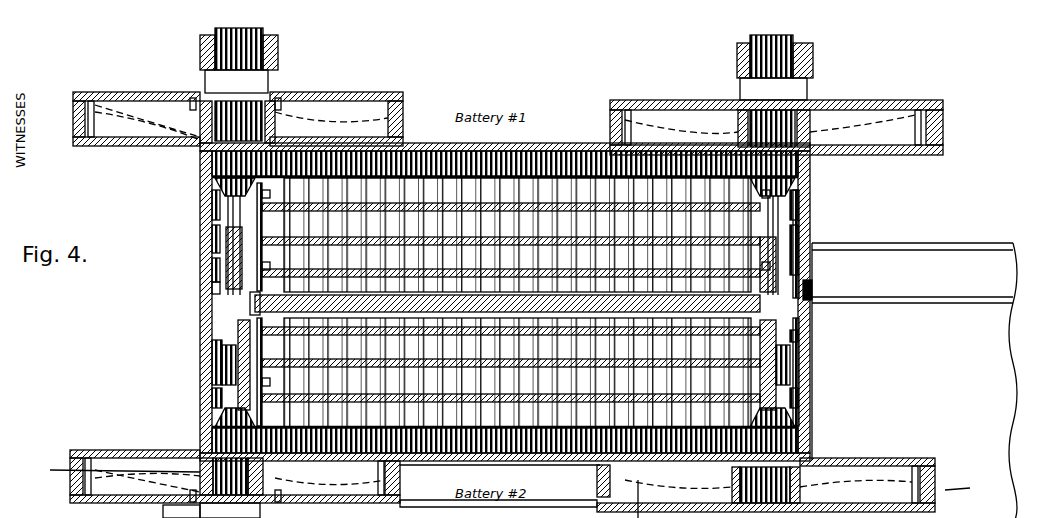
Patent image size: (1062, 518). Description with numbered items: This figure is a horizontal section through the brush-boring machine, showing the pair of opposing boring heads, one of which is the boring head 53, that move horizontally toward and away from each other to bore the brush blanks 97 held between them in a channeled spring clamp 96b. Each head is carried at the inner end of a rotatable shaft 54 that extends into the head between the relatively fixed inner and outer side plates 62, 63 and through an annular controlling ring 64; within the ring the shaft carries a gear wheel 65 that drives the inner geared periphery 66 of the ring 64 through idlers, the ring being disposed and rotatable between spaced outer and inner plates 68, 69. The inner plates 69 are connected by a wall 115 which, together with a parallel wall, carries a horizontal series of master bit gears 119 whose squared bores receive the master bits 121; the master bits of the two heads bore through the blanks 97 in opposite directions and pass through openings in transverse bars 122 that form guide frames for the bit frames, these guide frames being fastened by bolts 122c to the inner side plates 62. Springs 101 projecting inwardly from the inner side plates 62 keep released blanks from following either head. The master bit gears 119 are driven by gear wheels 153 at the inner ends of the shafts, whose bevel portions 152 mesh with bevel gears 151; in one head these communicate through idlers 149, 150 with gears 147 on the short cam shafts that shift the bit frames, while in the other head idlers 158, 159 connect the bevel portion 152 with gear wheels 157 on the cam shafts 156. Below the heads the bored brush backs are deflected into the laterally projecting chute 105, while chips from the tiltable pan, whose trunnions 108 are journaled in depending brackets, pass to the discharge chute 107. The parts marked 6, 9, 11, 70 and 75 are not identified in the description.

The base frame 6 is at (510, 483).
The spindle 9 is at (205, 95).
The belt 11 is at (296, 486).
The boring head 53 is at (505, 476).
The rotatable shaft 54 is at (770, 62).
The inner side plate 62 is at (805, 303).
The outer side plate 63 is at (808, 358).
The annular controlling ring 64 is at (935, 478).
The gear wheel 65 is at (200, 485).
The inner geared periphery 66 is at (122, 452).
The outer plate 68 is at (125, 503).
The inner plate 69 is at (905, 466).
The post 70 is at (935, 500).
The cross bar 75 is at (511, 302).
The clamp 96b is at (843, 351).
The brush blanks 97 is at (257, 315).
The springs 101 is at (250, 300).
The chute 105 is at (912, 403).
The discharge chute 107 is at (970, 262).
The trunnions 108 is at (812, 290).
The wall 115 is at (505, 456).
The master bit gears 119 is at (505, 305).
The master bits 121 is at (545, 141).
The transverse bars 122 is at (828, 378).
The bolts 122c is at (228, 282).
The gears 147 is at (800, 336).
The idlers 149 is at (238, 345).
The idlers 150 is at (212, 380).
The bevel gears 151 is at (810, 395).
The bevel portions 152 is at (800, 192).
The gear wheels 153 is at (810, 180).
The shafts 156 is at (226, 232).
The gear wheels 157 is at (212, 268).
The idlers 158 is at (800, 262).
The idlers 159 is at (212, 210).